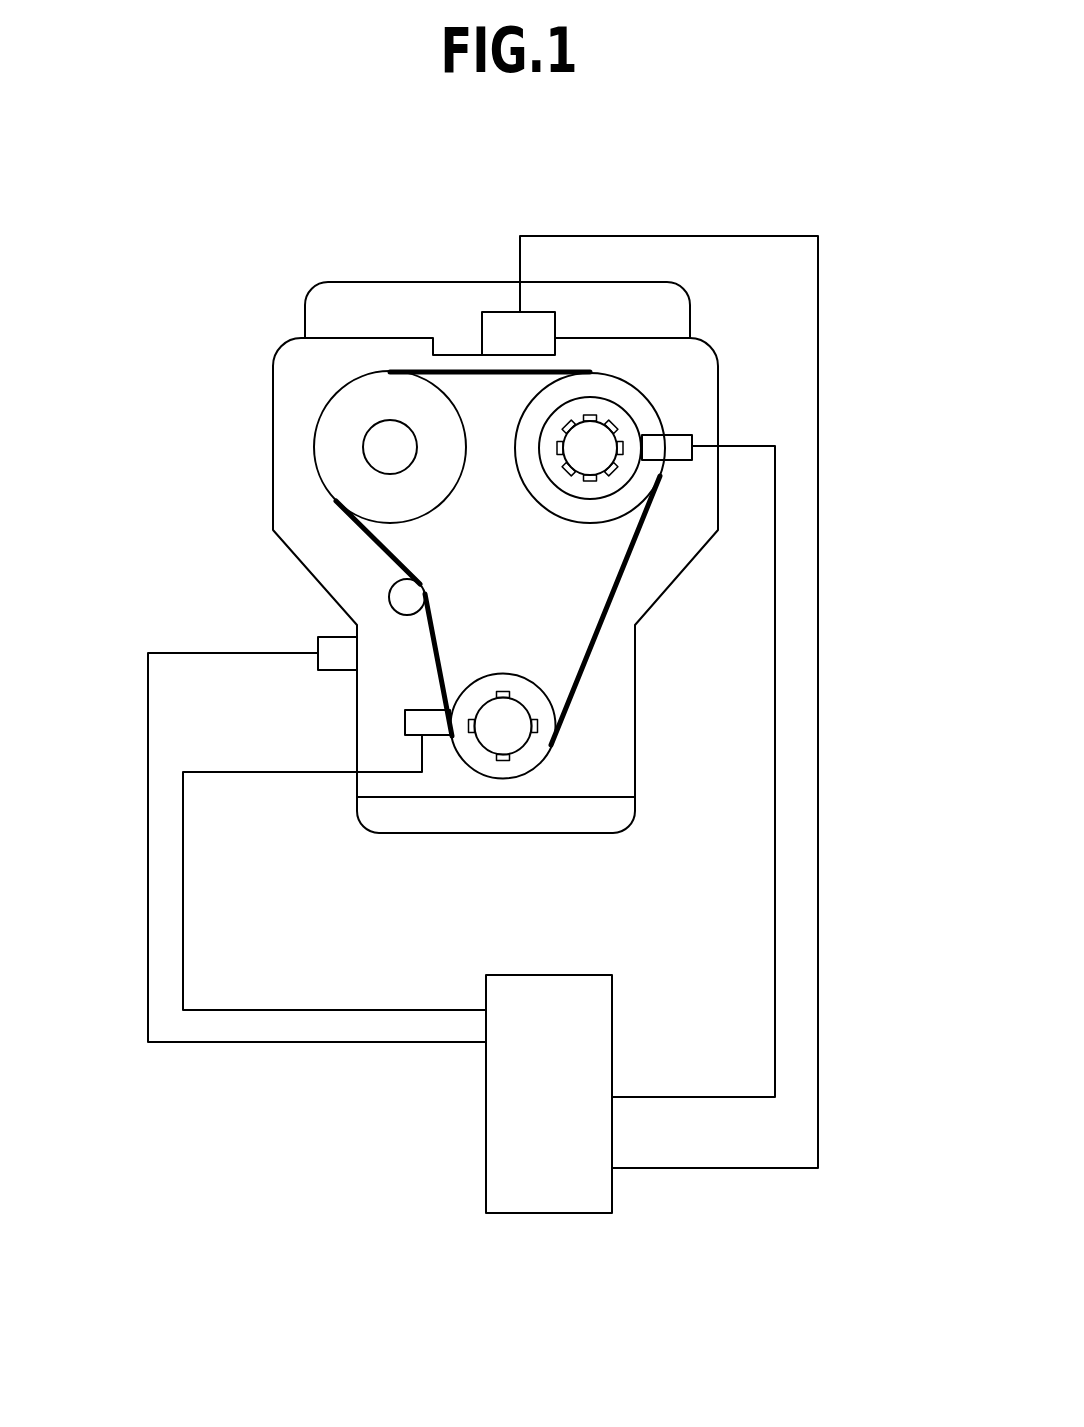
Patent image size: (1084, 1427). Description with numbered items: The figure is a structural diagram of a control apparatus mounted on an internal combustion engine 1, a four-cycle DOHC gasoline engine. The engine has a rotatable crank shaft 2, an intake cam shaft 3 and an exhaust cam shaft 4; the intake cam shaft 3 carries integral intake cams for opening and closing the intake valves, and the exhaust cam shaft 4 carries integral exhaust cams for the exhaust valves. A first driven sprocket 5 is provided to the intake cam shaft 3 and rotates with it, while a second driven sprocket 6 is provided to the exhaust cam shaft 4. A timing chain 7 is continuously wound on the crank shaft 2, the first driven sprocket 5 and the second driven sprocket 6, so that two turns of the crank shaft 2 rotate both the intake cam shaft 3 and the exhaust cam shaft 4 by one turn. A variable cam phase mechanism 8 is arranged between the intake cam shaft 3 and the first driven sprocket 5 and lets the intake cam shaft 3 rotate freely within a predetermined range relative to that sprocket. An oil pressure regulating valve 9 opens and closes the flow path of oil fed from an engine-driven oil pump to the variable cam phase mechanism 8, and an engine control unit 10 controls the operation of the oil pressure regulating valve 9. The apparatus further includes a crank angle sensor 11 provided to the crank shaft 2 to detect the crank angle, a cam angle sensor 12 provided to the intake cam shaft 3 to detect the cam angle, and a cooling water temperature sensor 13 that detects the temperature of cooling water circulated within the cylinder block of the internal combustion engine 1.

The internal combustion engine 1 is at (382, 282).
The crank shaft 2 is at (510, 727).
The intake cam shaft 3 is at (603, 453).
The exhaust cam shaft 4 is at (385, 457).
The first driven sprocket 5 is at (618, 375).
The second driven sprocket 6 is at (342, 395).
The timing chain 7 is at (613, 588).
The variable cam phase mechanism 8 is at (623, 417).
The oil pressure regulating valve 9 is at (500, 313).
The engine control unit 10 is at (550, 1213).
The crank angle sensor 11 is at (405, 713).
The cam angle sensor 12 is at (692, 435).
The cooling water temperature sensor 13 is at (318, 637).